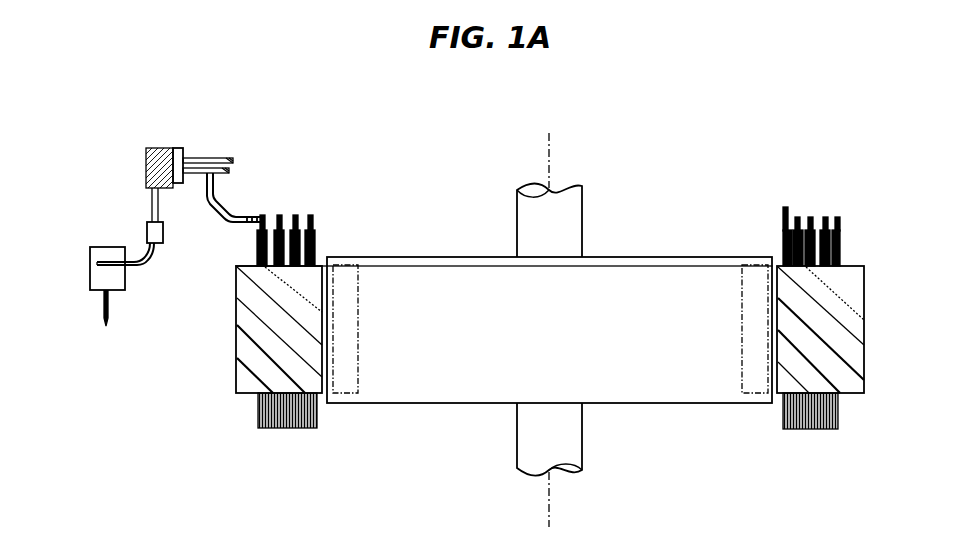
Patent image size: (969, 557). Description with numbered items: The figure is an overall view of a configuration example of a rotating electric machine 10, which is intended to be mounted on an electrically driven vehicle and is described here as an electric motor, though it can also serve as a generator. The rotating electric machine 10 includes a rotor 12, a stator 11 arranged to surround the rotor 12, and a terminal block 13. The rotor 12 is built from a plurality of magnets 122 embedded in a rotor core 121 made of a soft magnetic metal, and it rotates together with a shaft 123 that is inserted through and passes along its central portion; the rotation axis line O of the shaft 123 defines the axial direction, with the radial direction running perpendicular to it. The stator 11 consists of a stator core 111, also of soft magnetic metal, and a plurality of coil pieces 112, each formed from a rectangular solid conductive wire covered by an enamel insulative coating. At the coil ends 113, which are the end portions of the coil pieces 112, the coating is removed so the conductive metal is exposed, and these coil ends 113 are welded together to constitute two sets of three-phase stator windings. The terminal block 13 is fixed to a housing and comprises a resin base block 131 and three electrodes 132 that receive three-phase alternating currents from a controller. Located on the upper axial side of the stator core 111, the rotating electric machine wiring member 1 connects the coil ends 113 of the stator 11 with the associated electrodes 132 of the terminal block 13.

The rotating electric machine wiring member 1 is at (118, 178).
The rotating electric machine 10 is at (286, 136).
The stator 11 is at (270, 186).
The stator core 111 is at (864, 338).
The coil pieces 112 is at (270, 430).
The coil ends 113 is at (308, 213).
The rotor 12 is at (716, 240).
The rotor core 121 is at (420, 257).
The magnets 122 is at (343, 264).
The shaft 123 is at (583, 215).
The terminal block 13 is at (82, 243).
The base block 131 is at (88, 279).
The electrodes 132 is at (104, 319).
The rotation axis line O is at (550, 148).